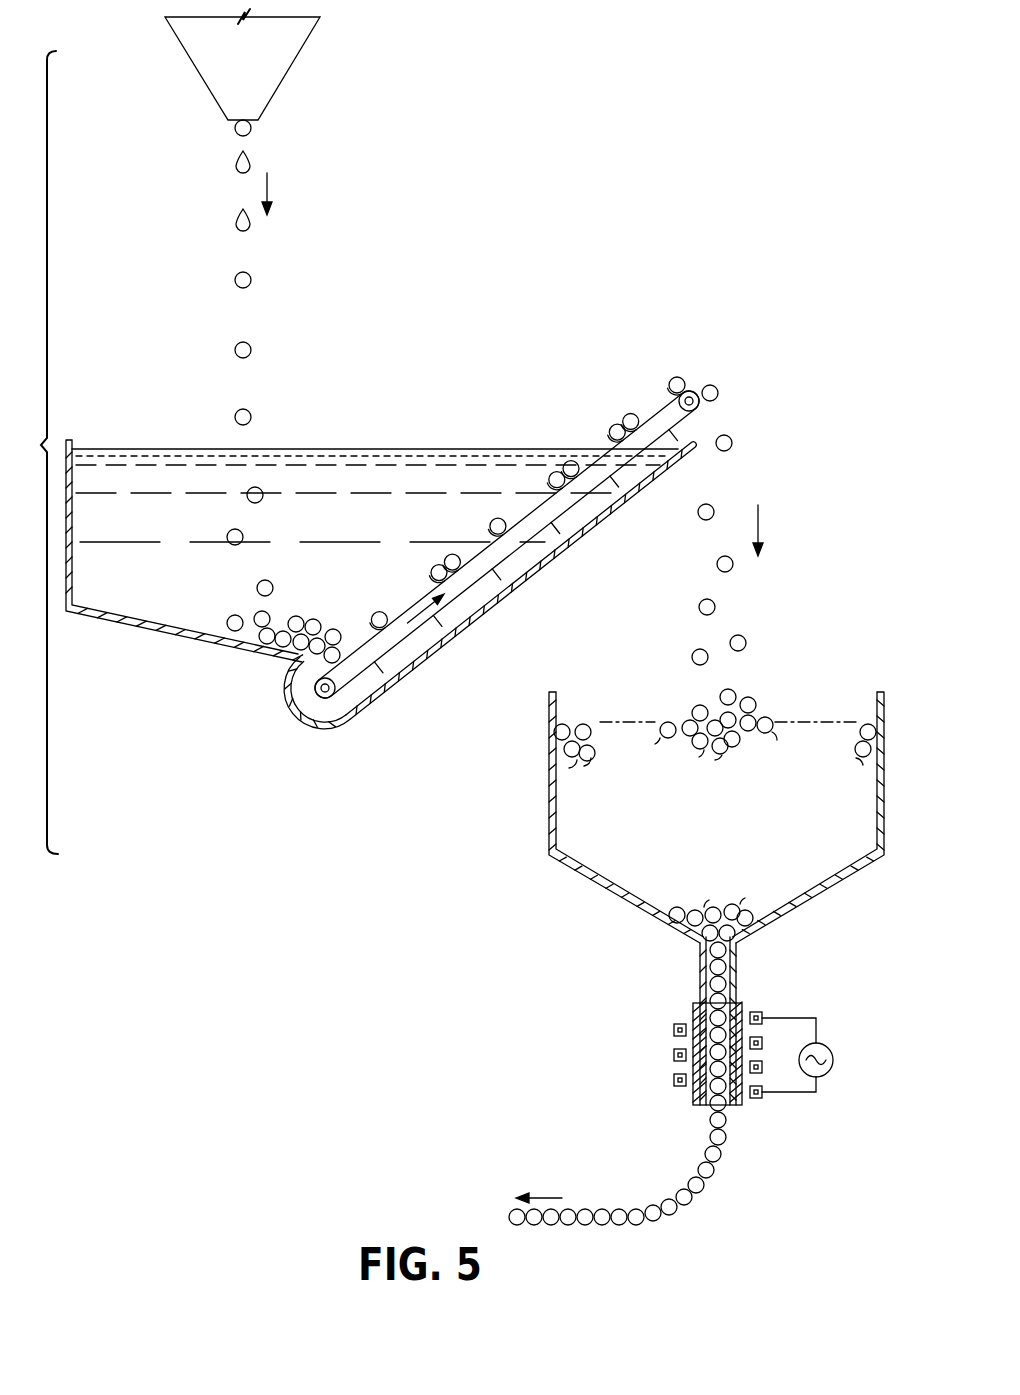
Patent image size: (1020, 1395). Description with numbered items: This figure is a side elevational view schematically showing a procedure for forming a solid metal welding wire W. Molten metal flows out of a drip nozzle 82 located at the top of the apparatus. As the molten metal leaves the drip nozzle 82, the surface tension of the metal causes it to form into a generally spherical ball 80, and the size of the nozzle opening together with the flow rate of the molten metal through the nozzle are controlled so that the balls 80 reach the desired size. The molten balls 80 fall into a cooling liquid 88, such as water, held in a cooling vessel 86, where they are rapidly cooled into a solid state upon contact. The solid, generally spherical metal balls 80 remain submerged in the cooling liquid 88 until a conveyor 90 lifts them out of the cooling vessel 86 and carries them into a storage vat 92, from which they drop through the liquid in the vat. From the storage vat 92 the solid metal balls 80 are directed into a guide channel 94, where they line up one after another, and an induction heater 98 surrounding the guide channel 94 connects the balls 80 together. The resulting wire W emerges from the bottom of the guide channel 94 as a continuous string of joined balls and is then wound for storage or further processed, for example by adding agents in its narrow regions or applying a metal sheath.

The generally spherical ball 80 is at (250, 414).
The drip nozzle 82 is at (285, 56).
The cooling vessel 86 is at (70, 437).
The cooling liquid 88 is at (410, 458).
The conveyor 90 is at (654, 405).
The storage vat 92 is at (881, 690).
The guide channel 94 is at (737, 972).
The induction heater 98 is at (673, 1030).
The wire W is at (652, 1227).